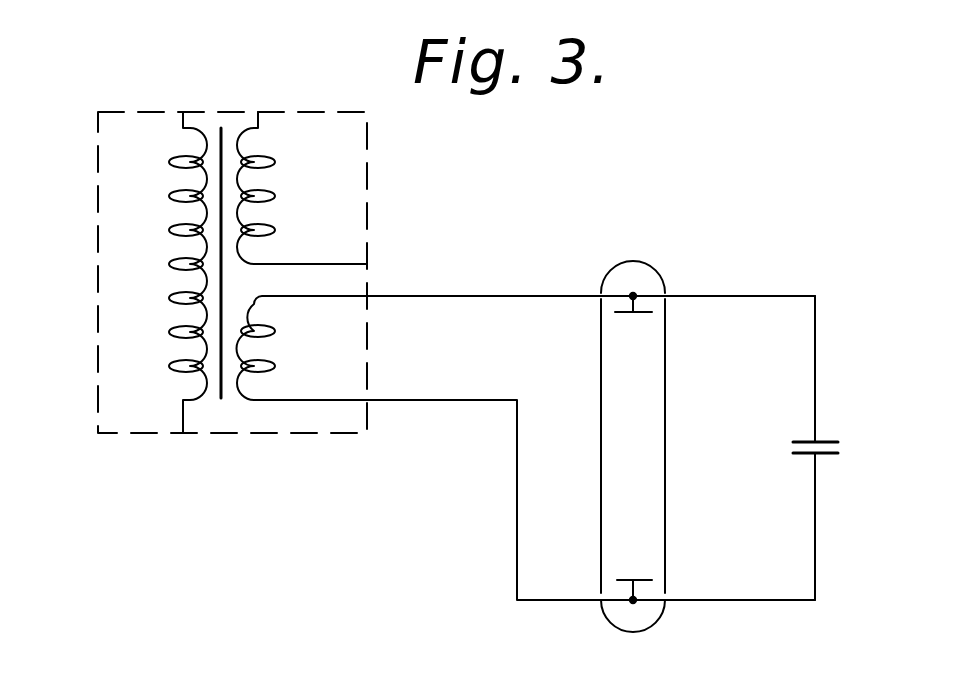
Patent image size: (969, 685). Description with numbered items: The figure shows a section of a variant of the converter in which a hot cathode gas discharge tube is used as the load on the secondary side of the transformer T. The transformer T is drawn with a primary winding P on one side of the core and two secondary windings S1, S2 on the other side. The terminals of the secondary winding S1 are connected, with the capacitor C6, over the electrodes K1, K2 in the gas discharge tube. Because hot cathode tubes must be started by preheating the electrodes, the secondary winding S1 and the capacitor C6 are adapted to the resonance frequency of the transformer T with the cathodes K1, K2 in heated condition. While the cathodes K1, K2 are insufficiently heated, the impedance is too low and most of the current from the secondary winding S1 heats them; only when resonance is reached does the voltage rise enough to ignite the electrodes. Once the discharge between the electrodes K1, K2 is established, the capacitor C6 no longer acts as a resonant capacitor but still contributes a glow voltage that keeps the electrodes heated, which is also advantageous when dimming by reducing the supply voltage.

The transformer T is at (97, 290).
The primary winding P is at (175, 272).
The secondary winding S1 is at (526, 448).
The second secondary winding S2 is at (302, 188).
The electrode K1 is at (654, 353).
The electrode K2 is at (654, 538).
The capacitor C6 is at (835, 448).